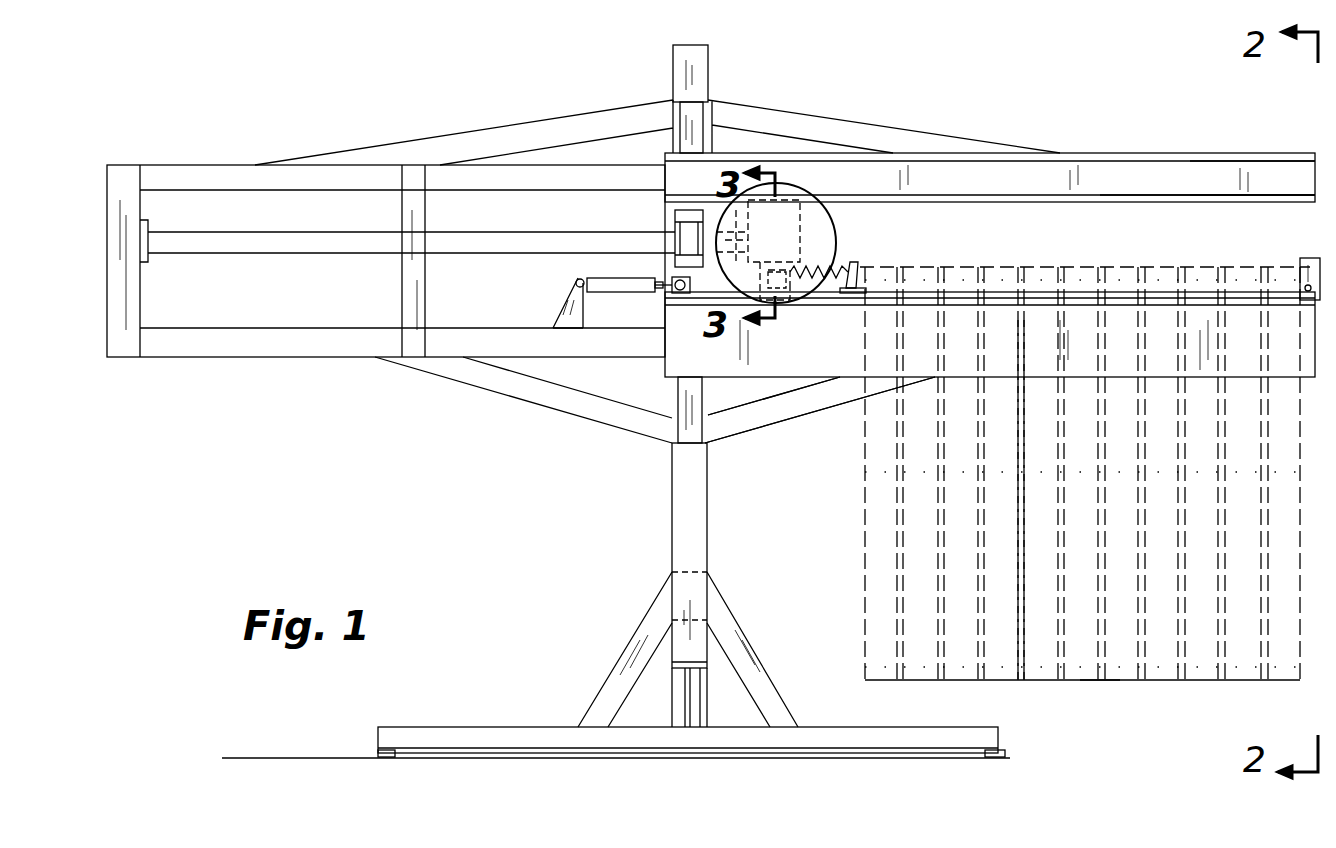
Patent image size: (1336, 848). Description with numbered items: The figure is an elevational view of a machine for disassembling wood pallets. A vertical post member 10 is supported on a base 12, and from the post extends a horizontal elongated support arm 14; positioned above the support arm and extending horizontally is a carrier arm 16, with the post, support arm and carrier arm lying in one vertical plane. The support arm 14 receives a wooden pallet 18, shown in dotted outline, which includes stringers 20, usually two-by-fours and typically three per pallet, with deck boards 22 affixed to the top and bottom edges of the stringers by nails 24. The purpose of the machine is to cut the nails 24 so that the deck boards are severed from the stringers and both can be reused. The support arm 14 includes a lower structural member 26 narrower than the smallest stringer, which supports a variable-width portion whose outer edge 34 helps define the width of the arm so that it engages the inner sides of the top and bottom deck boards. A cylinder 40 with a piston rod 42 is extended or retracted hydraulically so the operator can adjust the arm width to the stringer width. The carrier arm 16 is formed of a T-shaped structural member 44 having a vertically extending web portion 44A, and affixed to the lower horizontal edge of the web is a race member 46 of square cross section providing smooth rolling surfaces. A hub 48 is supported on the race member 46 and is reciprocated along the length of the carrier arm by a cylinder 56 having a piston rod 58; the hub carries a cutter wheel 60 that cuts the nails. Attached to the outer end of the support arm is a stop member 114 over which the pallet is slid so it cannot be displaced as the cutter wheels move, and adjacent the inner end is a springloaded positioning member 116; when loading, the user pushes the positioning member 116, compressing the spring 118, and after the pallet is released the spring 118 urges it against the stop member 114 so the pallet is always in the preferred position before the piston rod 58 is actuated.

The post member 10 is at (686, 497).
The base 12 is at (545, 730).
The support arm 14 is at (835, 418).
The carrier arm 16 is at (1022, 128).
The wooden pallet 18 is at (850, 490).
The stringers 20 is at (1142, 282).
The deck boards 22 is at (900, 550).
The nails 24 is at (1110, 672).
The lower structural member 26 is at (768, 370).
The outer edge 34 is at (832, 300).
The cylinder 40 is at (608, 280).
The piston rod 42 is at (660, 288).
The T-shaped structural member 44 is at (1112, 160).
The web portion 44A is at (1210, 170).
The race member 46 is at (1155, 200).
The hub 48 is at (800, 204).
The cylinder 56 is at (335, 245).
The piston rod 58 is at (685, 232).
The cutter wheel 60 is at (820, 225).
The stop member 114 is at (1300, 264).
The springloaded positioning member 116 is at (862, 268).
The spring 118 is at (840, 268).